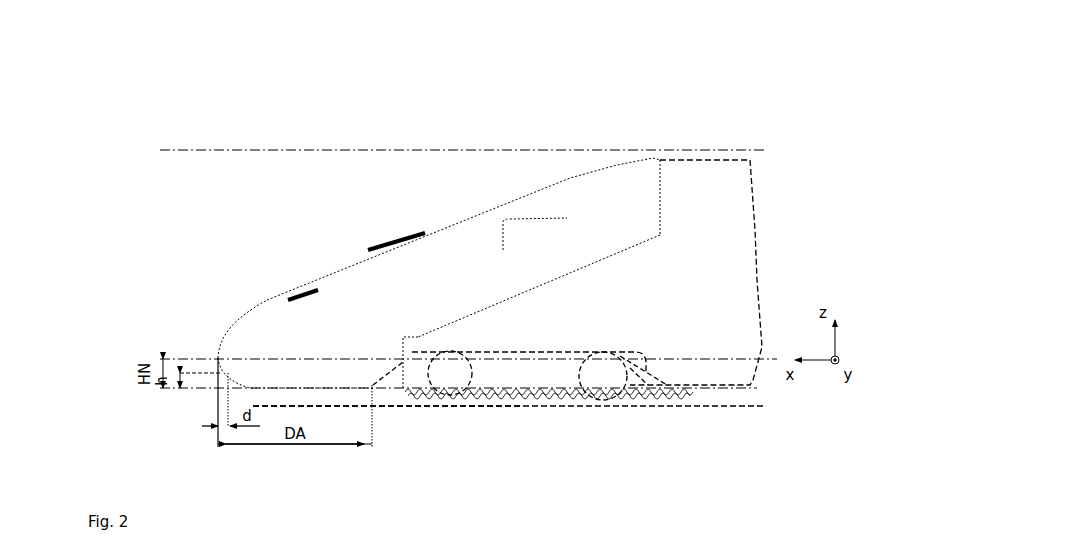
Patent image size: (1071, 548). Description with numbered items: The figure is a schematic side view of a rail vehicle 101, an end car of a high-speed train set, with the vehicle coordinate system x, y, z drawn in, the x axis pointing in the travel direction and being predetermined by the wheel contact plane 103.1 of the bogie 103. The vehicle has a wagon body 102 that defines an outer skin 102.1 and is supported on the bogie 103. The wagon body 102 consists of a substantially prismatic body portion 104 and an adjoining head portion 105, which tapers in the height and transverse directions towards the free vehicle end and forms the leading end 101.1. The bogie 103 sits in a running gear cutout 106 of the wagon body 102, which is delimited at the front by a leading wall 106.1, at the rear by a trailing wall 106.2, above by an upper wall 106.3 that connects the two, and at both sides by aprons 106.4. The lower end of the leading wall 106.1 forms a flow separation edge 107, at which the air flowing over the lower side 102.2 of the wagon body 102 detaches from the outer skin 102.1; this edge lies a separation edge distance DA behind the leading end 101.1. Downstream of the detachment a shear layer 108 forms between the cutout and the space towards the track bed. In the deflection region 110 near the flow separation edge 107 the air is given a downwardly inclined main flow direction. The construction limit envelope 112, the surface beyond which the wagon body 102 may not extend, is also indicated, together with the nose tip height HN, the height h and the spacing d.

The rail vehicle 101 is at (783, 45).
The leading end 101.1 is at (215, 358).
The wagon body 102 is at (676, 156).
The outer skin 102.1 is at (615, 163).
The lower side 102.2 is at (505, 414).
The bogie 103 is at (608, 407).
The wheel contact plane 103.1 is at (728, 404).
The body portion 104 is at (736, 162).
The head portion 105 is at (572, 177).
The running gear cutout 106 is at (548, 373).
The leading wall 106.1 is at (393, 367).
The trailing wall 106.2 is at (660, 372).
The upper wall 106.3 is at (503, 350).
The aprons 106.4 is at (625, 370).
The flow separation edge 107 is at (373, 385).
The shear layer 108 is at (398, 399).
The deflection region 110 is at (373, 397).
The construction limit envelope 112 is at (188, 150).